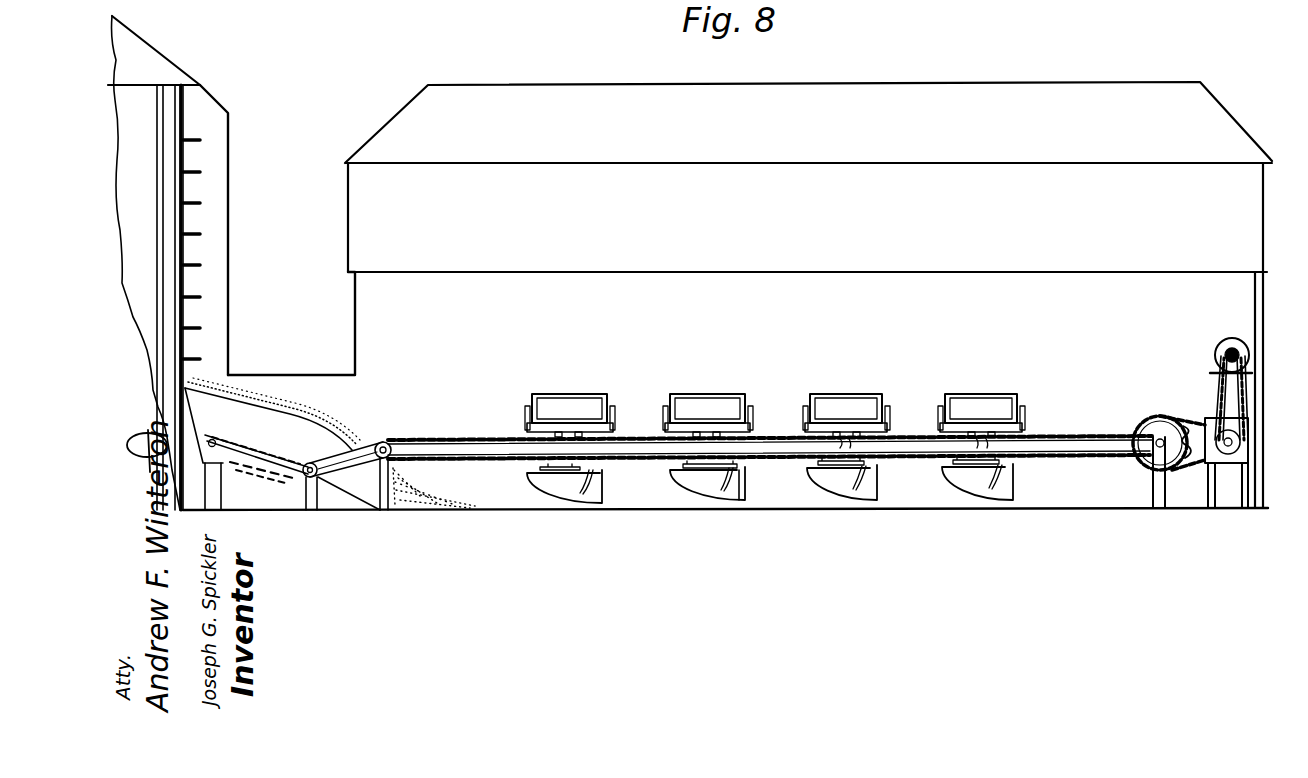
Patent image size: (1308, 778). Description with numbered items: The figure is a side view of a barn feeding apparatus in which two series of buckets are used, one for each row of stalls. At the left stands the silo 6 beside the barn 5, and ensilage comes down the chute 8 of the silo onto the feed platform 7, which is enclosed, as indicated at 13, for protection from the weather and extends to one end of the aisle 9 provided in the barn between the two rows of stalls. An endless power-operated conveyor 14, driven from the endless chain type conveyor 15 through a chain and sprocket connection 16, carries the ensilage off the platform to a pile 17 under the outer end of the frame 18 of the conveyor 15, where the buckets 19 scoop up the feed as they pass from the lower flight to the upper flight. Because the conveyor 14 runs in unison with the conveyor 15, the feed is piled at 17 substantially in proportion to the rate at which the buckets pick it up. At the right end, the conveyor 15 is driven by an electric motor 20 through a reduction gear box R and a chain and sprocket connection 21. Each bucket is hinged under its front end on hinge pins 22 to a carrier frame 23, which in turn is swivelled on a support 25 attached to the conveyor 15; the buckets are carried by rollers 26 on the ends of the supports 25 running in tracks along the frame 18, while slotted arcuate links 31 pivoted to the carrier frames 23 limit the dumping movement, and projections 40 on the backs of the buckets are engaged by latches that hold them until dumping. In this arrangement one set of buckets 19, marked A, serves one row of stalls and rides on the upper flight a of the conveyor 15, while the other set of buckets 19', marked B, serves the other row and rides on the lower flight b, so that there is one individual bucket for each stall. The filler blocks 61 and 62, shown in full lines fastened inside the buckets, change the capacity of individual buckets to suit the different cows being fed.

The barn 5 is at (1263, 222).
The silo 6 is at (175, 113).
The feed platform 7 is at (290, 432).
The chute 8 is at (228, 232).
The aisle 9 is at (1198, 489).
The enclosure 13 is at (296, 375).
The endless power-operated conveyor 14 is at (268, 476).
The endless chain type conveyor 15 is at (488, 462).
The chain and sprocket connection 16 is at (356, 442).
The pile 17 is at (410, 498).
The frame 18 is at (1155, 484).
The buckets 19 is at (901, 435).
The buckets 19' is at (1019, 484).
The electric motor 20 is at (1231, 344).
The chain and sprocket connection 21 is at (1192, 417).
The hinge pins 22 is at (818, 466).
The carrier frames 23 is at (983, 430).
The supports 25 is at (849, 448).
The rollers 26 is at (843, 432).
The slotted arcuate links 31 is at (1020, 409).
The projections 40 is at (893, 465).
The filler block 61 is at (543, 397).
The filler block 62 is at (677, 393).
The set of buckets A is at (834, 391).
The set of buckets B is at (603, 493).
The upper flight a is at (895, 430).
The lower flight b is at (622, 464).
The reduction gear box R is at (1247, 452).